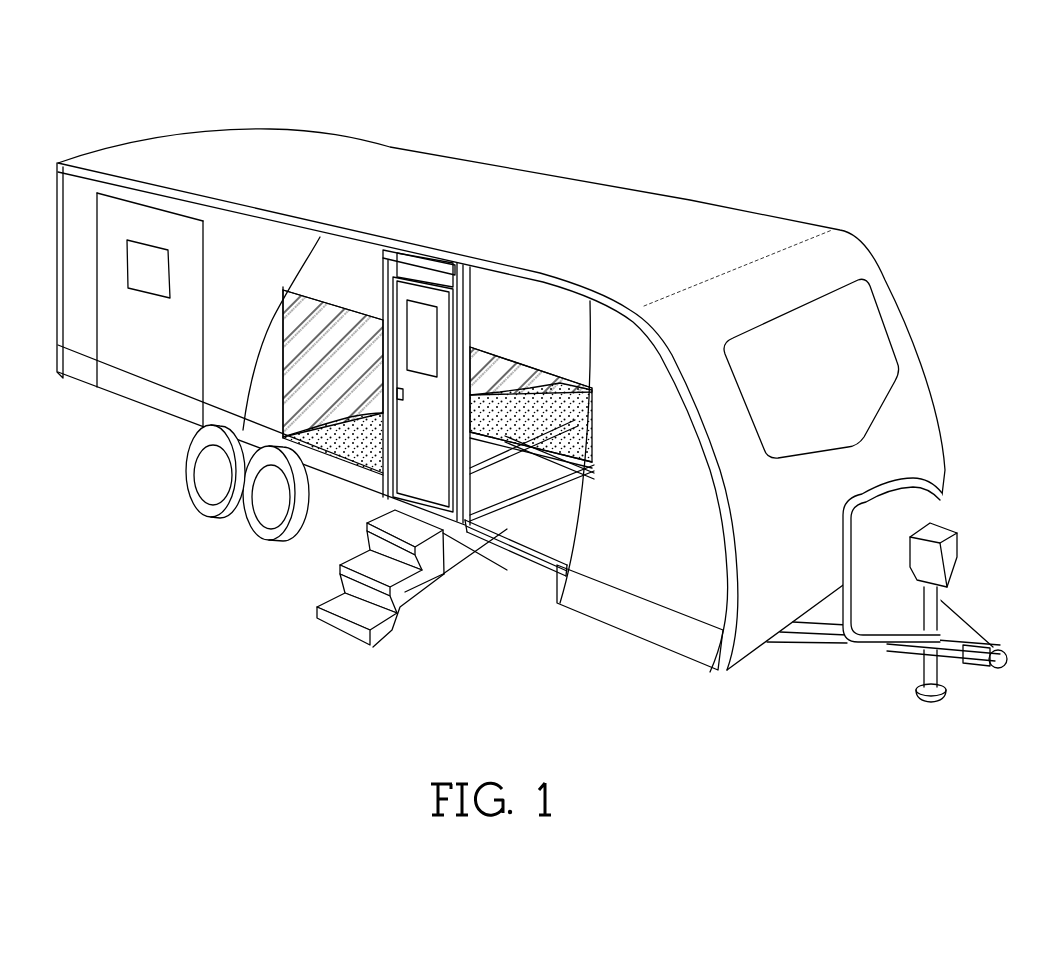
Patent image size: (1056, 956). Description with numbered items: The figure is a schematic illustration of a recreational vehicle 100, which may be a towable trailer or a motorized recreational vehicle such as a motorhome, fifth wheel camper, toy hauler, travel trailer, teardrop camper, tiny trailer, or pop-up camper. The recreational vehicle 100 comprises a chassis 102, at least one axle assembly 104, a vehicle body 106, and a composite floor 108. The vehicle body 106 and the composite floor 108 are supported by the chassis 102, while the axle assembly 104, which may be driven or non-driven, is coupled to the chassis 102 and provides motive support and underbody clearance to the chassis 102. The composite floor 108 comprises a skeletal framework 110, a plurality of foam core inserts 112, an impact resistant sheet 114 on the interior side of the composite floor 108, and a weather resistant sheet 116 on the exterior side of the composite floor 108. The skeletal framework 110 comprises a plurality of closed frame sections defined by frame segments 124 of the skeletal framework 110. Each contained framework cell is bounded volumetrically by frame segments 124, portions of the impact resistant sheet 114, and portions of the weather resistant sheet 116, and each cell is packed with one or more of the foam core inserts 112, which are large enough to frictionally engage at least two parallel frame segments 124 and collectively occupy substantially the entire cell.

The recreational vehicle 100 is at (554, 378).
The chassis 102 is at (982, 610).
The axle assembly 104 is at (221, 522).
The vehicle body 106 is at (501, 400).
The composite floor 108 is at (522, 563).
The skeletal framework 110 is at (560, 578).
The foam core inserts 112 is at (370, 457).
The impact resistant sheet 114 is at (323, 400).
The weather resistant sheet 116 is at (533, 497).
The frame segments 124 is at (482, 556).